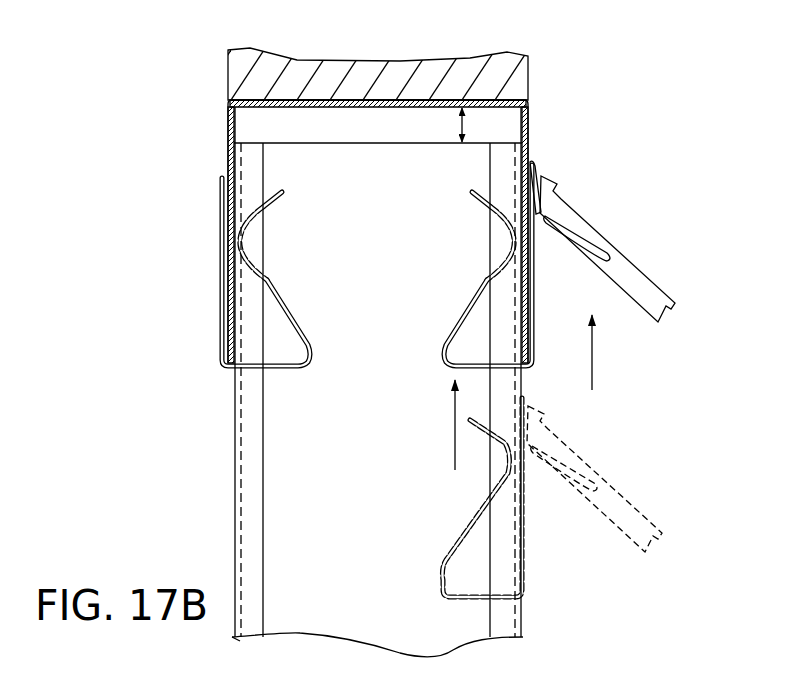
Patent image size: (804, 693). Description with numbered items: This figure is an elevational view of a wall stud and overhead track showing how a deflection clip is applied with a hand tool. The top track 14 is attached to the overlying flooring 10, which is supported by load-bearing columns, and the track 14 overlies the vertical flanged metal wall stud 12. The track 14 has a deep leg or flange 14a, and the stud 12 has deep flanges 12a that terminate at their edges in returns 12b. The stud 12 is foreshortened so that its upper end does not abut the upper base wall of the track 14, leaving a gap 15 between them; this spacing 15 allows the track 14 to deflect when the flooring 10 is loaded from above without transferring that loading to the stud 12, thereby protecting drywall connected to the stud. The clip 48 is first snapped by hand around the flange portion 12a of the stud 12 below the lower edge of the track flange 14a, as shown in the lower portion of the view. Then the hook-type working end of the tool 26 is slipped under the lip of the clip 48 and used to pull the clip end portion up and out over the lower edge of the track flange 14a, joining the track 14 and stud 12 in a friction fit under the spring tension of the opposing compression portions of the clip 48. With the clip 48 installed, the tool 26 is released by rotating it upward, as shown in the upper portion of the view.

The flooring 10 is at (340, 63).
The wall stud 12 is at (521, 618).
The flange 12a is at (263, 478).
The return 12b is at (492, 475).
The top track 14 is at (431, 99).
The flange 14a is at (528, 135).
The gap 15 is at (462, 125).
The tool 26 is at (591, 201).
The clip 48 is at (293, 313).